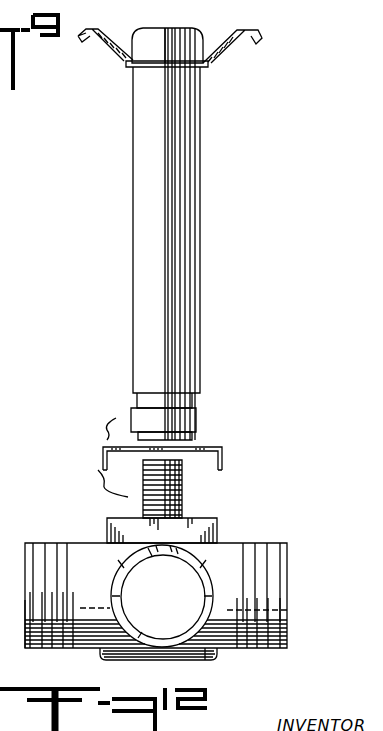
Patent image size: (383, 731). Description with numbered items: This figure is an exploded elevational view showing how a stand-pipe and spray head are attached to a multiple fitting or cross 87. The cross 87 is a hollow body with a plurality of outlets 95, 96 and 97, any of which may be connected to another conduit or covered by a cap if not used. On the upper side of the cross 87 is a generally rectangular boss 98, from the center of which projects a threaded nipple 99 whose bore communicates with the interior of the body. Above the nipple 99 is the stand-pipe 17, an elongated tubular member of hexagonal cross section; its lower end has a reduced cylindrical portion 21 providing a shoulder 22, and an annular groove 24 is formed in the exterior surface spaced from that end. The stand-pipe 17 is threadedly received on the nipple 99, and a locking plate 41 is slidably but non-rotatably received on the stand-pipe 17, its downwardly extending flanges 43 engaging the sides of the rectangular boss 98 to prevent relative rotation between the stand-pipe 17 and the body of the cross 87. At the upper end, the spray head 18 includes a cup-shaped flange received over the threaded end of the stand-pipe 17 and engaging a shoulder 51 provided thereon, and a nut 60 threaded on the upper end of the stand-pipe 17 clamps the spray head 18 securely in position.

The nut 60 is at (196, 30).
The spray head 18 is at (228, 49).
The shoulder 51 is at (133, 66).
The stand-pipe 17 is at (202, 247).
The annular groove 24 is at (133, 394).
The shoulder 22 is at (196, 430).
The reduced cylindrical portion 21 is at (192, 438).
The locking plate 41 is at (226, 444).
The flanges 43 is at (103, 459).
The threaded nipple 99 is at (183, 506).
The rectangular boss 98 is at (217, 530).
The outlet 97 is at (287, 572).
The outlet 95 is at (50, 648).
The outlet 96 is at (136, 648).
The cross fitting 87 is at (221, 659).